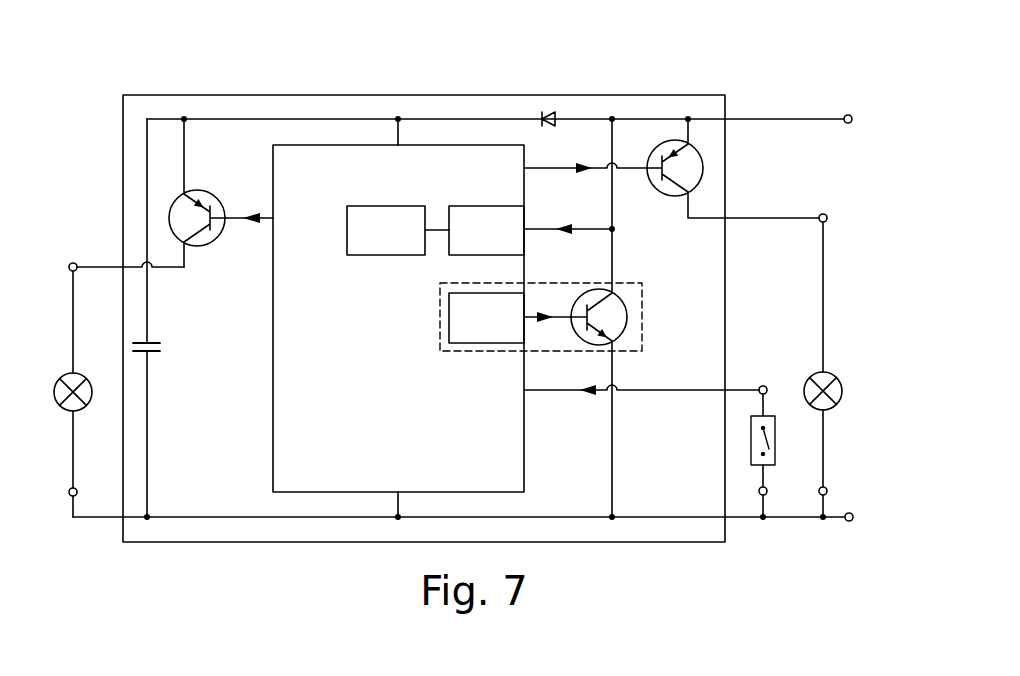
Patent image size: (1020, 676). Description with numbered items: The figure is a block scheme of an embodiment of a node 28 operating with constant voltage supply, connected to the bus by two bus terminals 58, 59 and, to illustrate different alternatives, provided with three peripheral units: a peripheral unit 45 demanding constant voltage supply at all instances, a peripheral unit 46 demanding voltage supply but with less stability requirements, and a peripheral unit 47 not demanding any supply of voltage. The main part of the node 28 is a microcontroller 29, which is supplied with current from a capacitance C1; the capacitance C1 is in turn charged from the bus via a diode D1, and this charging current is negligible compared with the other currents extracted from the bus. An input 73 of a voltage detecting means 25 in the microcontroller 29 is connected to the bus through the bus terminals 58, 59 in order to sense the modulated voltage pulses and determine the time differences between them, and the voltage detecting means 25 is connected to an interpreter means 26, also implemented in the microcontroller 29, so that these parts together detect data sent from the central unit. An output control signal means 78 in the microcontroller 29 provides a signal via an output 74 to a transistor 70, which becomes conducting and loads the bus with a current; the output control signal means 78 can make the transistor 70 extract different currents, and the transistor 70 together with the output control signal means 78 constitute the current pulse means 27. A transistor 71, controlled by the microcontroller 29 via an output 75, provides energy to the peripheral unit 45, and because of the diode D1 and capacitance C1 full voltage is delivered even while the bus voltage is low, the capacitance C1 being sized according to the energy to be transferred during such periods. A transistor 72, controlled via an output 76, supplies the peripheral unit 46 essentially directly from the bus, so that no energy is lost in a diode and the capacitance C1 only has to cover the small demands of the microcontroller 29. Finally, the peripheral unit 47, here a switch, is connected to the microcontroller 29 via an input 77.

The node 28 is at (258, 100).
The microcontroller 29 is at (287, 417).
The voltage detecting means 25 is at (495, 218).
The interpreter means 26 is at (362, 250).
The output control signal means 78 is at (455, 314).
The current pulse means 27 is at (632, 290).
The transistor 70 is at (660, 316).
The transistor 71 is at (178, 218).
The transistor 72 is at (698, 150).
The input 73 is at (562, 226).
The output 74 is at (543, 323).
The output 75 is at (251, 213).
The output 76 is at (552, 166).
The input 77 is at (590, 395).
The capacitance C1 is at (153, 342).
The diode D1 is at (547, 112).
The peripheral unit 45 is at (68, 412).
The peripheral unit 46 is at (813, 372).
The peripheral unit 47 is at (750, 448).
The bus terminal 58 is at (848, 112).
The bus terminal 59 is at (848, 524).